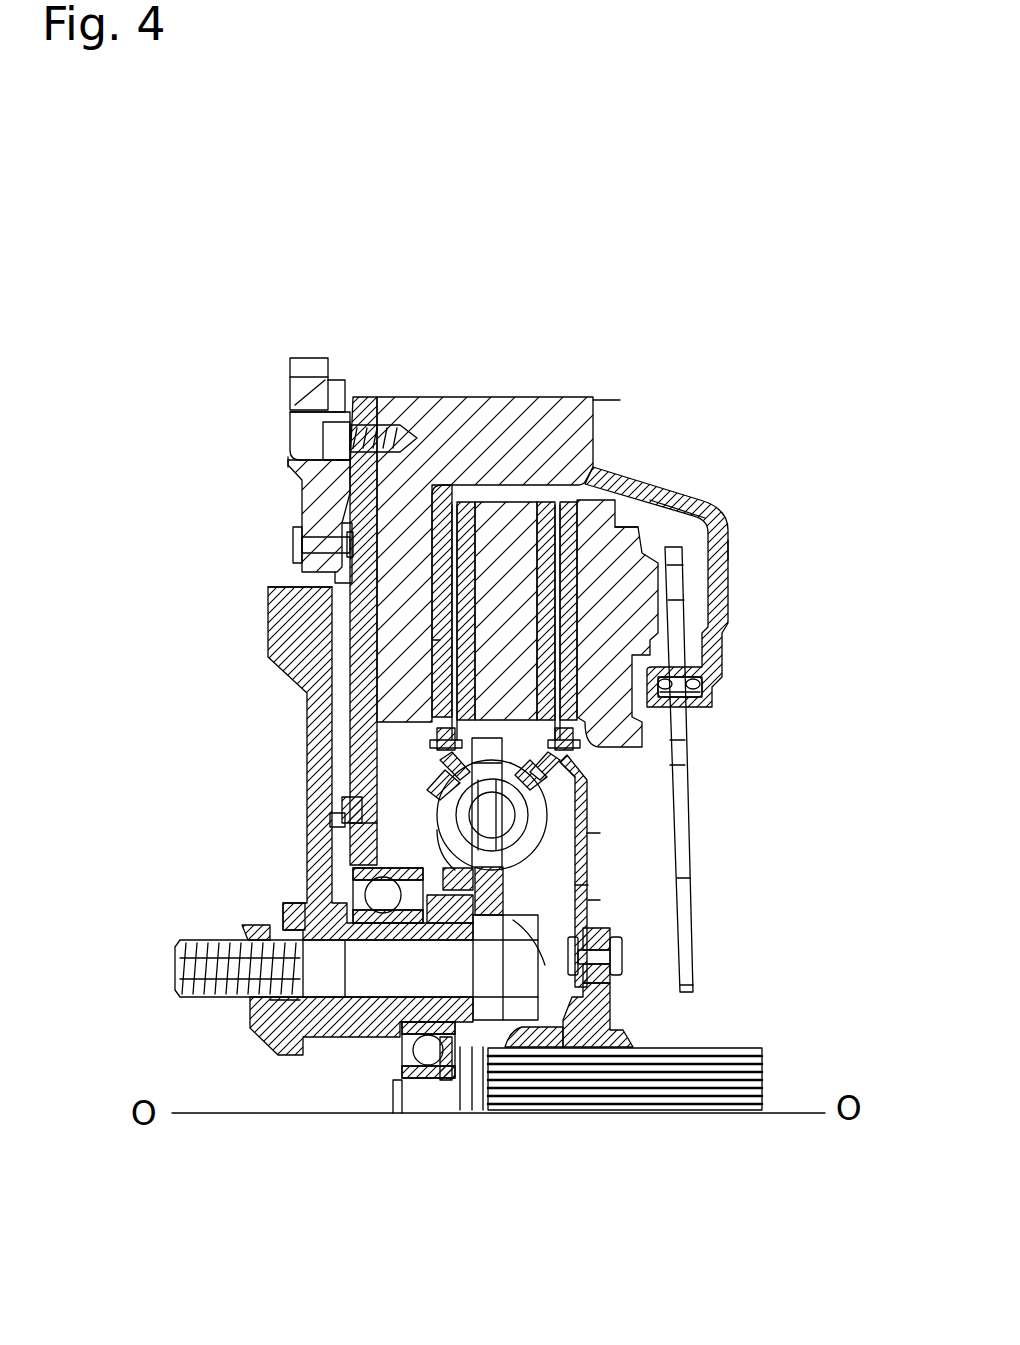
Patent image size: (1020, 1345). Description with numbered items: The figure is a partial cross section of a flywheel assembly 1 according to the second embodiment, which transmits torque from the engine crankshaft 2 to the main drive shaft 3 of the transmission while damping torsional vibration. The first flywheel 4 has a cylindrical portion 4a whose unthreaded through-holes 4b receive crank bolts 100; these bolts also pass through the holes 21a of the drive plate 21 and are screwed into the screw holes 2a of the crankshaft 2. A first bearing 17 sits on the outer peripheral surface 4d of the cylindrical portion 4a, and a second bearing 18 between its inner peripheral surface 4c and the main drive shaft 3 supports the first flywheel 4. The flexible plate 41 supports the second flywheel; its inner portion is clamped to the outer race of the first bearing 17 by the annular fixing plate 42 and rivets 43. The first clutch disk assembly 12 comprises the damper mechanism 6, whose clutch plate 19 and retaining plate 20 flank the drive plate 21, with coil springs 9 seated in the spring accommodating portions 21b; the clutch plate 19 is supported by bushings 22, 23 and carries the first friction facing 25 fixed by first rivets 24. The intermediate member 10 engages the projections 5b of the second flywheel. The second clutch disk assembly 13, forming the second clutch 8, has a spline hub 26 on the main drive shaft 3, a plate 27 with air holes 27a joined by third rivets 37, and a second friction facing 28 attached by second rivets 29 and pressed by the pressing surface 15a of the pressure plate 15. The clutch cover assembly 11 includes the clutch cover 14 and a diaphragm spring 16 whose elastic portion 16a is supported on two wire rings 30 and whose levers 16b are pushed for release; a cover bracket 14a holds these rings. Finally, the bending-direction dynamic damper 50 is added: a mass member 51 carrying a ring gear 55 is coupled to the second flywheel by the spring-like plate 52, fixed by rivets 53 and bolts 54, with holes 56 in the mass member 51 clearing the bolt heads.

The flywheel assembly 1 is at (678, 310).
The crankshaft 2 is at (262, 937).
The screw holes 2a is at (176, 956).
The main drive shaft 3 is at (730, 1047).
The first flywheel 4 is at (293, 628).
The cylindrical portion 4a is at (453, 1010).
The through-holes 4b is at (360, 993).
The inner peripheral surface 4c is at (473, 1040).
The outer peripheral surface 4d is at (340, 892).
The projections 5b is at (566, 395).
The damper mechanism 6 is at (583, 860).
The second clutch 8 is at (553, 490).
The coil springs 9 is at (490, 815).
The intermediate member 10 is at (503, 533).
The clutch cover assembly 11 is at (752, 468).
The first clutch disk assembly 12 is at (435, 740).
The second clutch disk assembly 13 is at (630, 933).
The clutch cover 14 is at (724, 556).
The cover bracket 14a is at (690, 722).
The pressure plate 15 is at (620, 552).
The pressing surface 15a is at (630, 575).
The diaphragm spring 16 is at (679, 752).
The annular elastic portion 16a is at (681, 602).
The levers 16b is at (688, 878).
The first bearing 17 is at (347, 893).
The second bearing 18 is at (390, 1063).
The clutch plate 19 is at (430, 840).
The retaining plate 20 is at (588, 886).
The drive plate 21 is at (545, 965).
The holes 21a is at (518, 1047).
The spring accommodating portions 21b is at (585, 790).
The bushing 22 is at (350, 852).
The bushing 23 is at (250, 1005).
The first rivets 24 is at (417, 765).
The first friction facing 25 is at (440, 640).
The spline hub 26 is at (603, 1013).
The plate 27 is at (590, 900).
The holes 27a is at (587, 835).
The second friction facing 28 is at (618, 525).
The second rivets 29 is at (577, 747).
The wire rings 30 is at (700, 676).
The third rivets 37 is at (694, 983).
The flexible plate 41 is at (302, 601).
The annular fixing plate 42 is at (350, 808).
The rivets 43 is at (350, 842).
The bending-direction dynamic damper 50 is at (245, 390).
The mass member 51 is at (303, 478).
The plate 52 is at (300, 500).
The rivets 53 is at (293, 542).
The bolts 54 is at (357, 395).
The ring gear 55 is at (300, 387).
The holes 56 is at (288, 424).
The crank bolts 100 is at (172, 994).